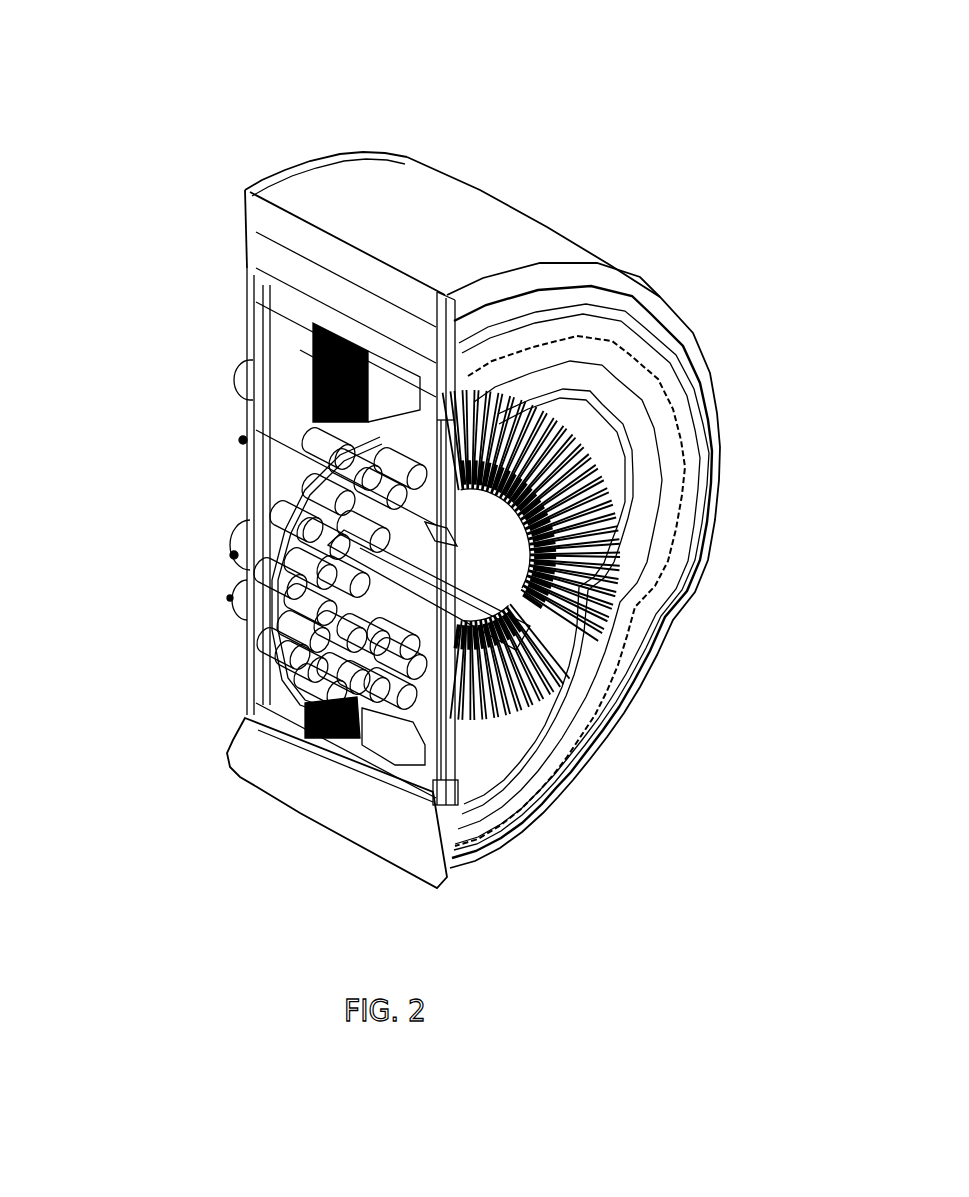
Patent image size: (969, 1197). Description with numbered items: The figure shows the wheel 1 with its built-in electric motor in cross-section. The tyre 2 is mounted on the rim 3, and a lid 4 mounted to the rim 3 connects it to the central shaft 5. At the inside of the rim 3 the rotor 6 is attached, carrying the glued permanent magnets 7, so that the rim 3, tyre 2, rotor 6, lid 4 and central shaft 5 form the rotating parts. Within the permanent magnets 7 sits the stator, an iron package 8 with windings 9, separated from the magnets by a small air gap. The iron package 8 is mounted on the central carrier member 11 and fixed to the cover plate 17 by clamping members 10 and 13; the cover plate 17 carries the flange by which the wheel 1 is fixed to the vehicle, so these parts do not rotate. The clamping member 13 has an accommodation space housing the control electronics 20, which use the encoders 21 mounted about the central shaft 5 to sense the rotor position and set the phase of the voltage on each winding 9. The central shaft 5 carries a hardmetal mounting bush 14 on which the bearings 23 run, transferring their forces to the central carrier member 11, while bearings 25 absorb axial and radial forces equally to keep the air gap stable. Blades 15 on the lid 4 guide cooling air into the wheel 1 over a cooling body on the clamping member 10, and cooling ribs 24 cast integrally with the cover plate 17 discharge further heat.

The wheel 1 is at (680, 221).
The tyre 2 is at (248, 204).
The rim 3 is at (247, 240).
The lid 4 is at (250, 307).
The central shaft 5 is at (503, 618).
The rotor 6 is at (291, 294).
The permanent magnets 7 is at (331, 330).
The iron package 8 is at (398, 392).
The windings 9 is at (362, 352).
The clamping member 10 is at (235, 391).
The central carrier member 11 is at (327, 433).
The clamping member 13 is at (440, 720).
The mounting bush 14 is at (453, 568).
The blades 15 is at (240, 440).
The cover plate 17 is at (539, 369).
The control electronics 20 is at (255, 654).
The encoders 21 is at (510, 653).
The bearings 23 is at (440, 538).
The cooling ribs 24 is at (550, 651).
The bearings 25 is at (438, 420).